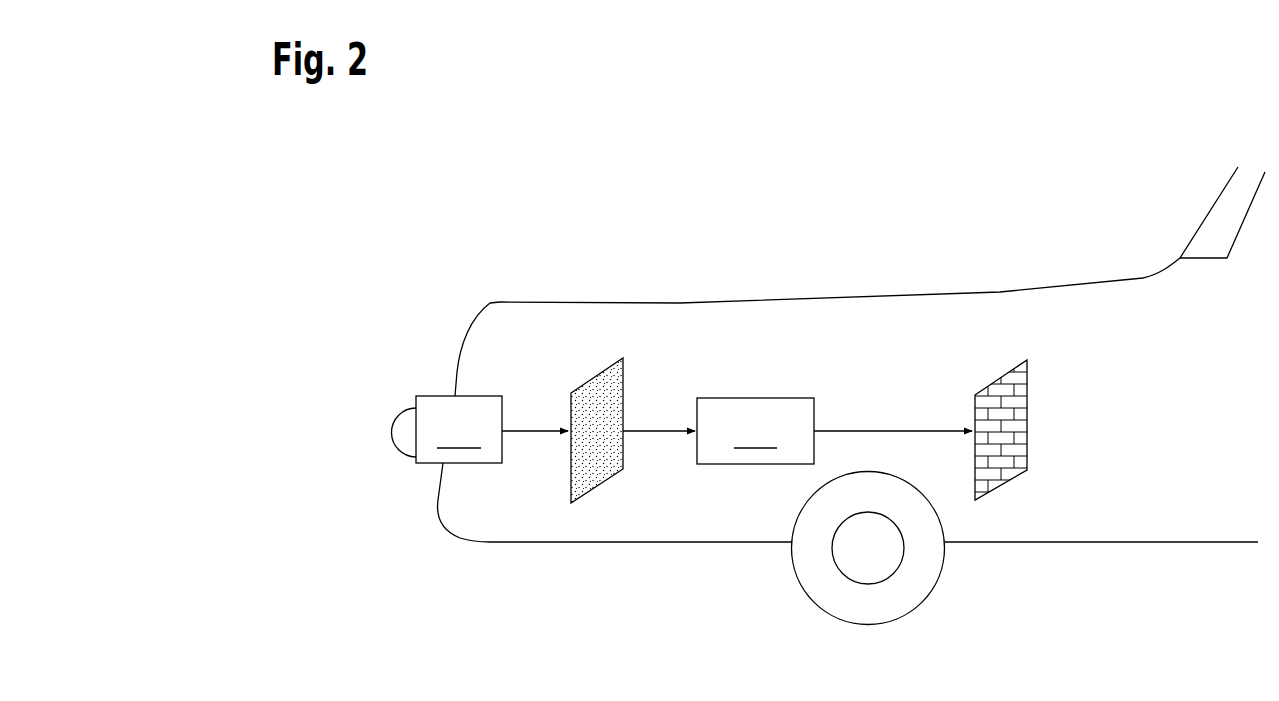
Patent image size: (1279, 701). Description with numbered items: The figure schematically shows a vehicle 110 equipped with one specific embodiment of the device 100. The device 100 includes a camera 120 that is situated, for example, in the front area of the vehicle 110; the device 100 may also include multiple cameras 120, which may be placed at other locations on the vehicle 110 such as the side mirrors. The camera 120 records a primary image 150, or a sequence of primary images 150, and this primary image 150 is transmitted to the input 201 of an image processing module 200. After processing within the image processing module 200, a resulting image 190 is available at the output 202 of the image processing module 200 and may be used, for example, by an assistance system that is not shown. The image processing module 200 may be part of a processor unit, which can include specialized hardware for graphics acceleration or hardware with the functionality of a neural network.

The vehicle 100 is at (828, 396).
The vehicle body 110 is at (466, 294).
The sensor unit 120 is at (480, 429).
The first filter element 150 is at (593, 377).
The second filter element 190 is at (1000, 378).
The processing unit 200 is at (755, 431).
The input signal 201 is at (691, 419).
The output signal 202 is at (821, 419).